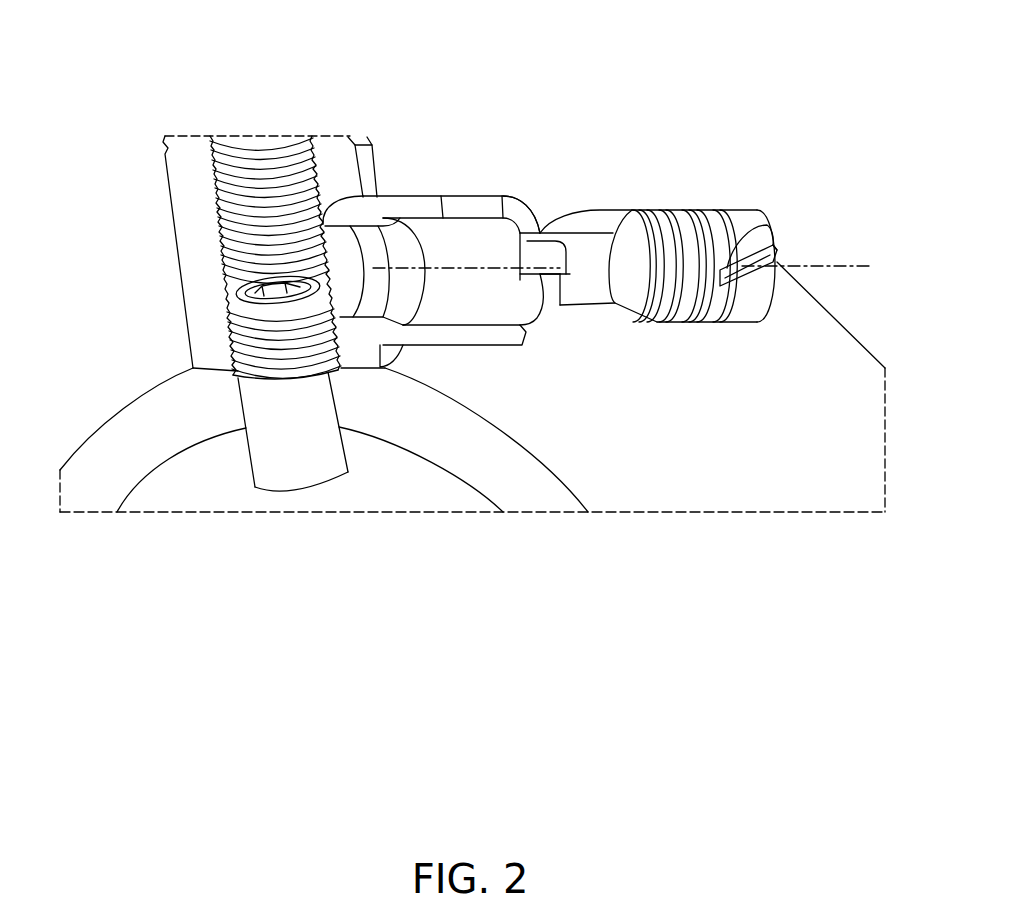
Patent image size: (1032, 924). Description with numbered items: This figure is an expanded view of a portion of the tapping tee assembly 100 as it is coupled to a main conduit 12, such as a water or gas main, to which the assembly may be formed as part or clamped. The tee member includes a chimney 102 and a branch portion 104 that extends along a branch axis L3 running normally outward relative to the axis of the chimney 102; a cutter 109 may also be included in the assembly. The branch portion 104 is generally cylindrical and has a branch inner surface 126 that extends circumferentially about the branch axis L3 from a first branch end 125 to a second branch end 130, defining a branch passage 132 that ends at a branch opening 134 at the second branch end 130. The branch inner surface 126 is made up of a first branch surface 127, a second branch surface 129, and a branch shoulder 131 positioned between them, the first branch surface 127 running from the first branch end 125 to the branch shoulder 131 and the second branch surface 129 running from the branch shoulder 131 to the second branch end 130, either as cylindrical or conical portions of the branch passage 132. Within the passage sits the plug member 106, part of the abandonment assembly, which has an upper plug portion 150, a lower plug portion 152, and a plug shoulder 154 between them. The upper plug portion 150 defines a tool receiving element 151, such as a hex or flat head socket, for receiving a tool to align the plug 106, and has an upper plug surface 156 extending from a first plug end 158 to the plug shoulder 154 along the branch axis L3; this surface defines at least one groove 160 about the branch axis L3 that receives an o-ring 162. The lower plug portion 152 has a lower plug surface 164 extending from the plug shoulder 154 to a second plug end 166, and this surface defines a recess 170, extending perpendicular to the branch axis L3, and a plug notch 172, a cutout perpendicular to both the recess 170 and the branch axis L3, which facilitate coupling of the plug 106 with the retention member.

The main conduit 12 is at (137, 390).
The tapping tee assembly 100 is at (652, 92).
The chimney 102 is at (171, 233).
The branch portion 104 is at (496, 194).
The plug member 106 is at (690, 210).
The cutter 109 is at (220, 317).
The first branch end 125 is at (322, 224).
The branch inner surface 126 is at (415, 331).
The first branch surface 127 is at (371, 275).
The second branch surface 129 is at (443, 217).
The second branch end 130 is at (526, 201).
The branch shoulder 131 is at (407, 223).
The branch passage 132 is at (442, 313).
The branch opening 134 is at (524, 320).
The upper plug portion 150 is at (733, 210).
The tool receiving element 151 is at (774, 228).
The lower plug portion 152 is at (585, 231).
The plug shoulder 154 is at (626, 225).
The upper plug surface 156 is at (697, 323).
The first plug end 158 is at (768, 312).
The groove 160 is at (727, 323).
The o-ring 162 is at (700, 323).
The lower plug surface 164 is at (593, 305).
The second plug end 166 is at (515, 275).
The recess 170 is at (563, 279).
The plug notch 172 is at (540, 253).
The branch axis L3 is at (835, 265).